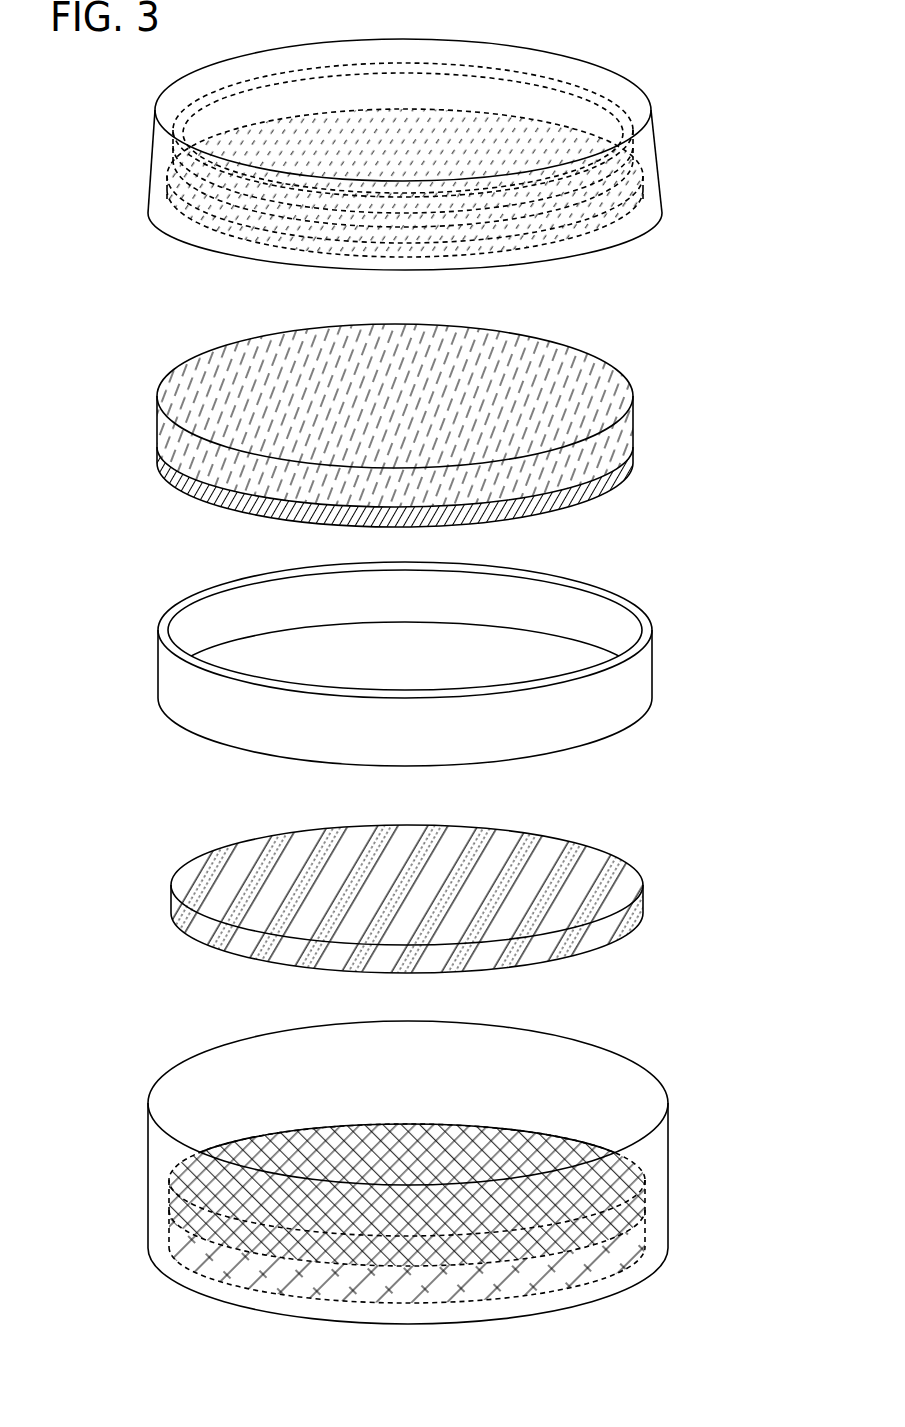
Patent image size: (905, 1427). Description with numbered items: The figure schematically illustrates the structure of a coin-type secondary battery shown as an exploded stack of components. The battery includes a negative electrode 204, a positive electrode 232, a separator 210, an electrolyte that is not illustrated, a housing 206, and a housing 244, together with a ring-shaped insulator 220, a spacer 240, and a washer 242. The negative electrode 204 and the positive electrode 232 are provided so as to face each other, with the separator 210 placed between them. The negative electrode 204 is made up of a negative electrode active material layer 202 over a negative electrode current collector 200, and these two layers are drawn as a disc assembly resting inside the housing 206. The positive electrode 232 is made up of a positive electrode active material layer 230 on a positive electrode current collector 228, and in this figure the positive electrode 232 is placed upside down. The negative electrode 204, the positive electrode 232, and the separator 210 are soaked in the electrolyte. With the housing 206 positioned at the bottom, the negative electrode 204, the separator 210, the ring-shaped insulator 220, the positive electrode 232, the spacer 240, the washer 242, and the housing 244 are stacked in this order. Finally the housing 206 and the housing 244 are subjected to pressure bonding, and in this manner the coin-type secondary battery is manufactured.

The negative electrode current collector 200 is at (645, 1248).
The negative electrode active material layer 202 is at (645, 1210).
The negative electrode 204 is at (488, 1213).
The housing 206 is at (668, 1160).
The separator 210 is at (182, 913).
The ring-shaped insulator 220 is at (652, 670).
The positive electrode current collector 228 is at (633, 427).
The positive electrode active material layer 230 is at (633, 470).
The positive electrode 232 is at (480, 425).
The spacer 240 is at (192, 220).
The washer 242 is at (187, 140).
The housing 244 is at (652, 110).